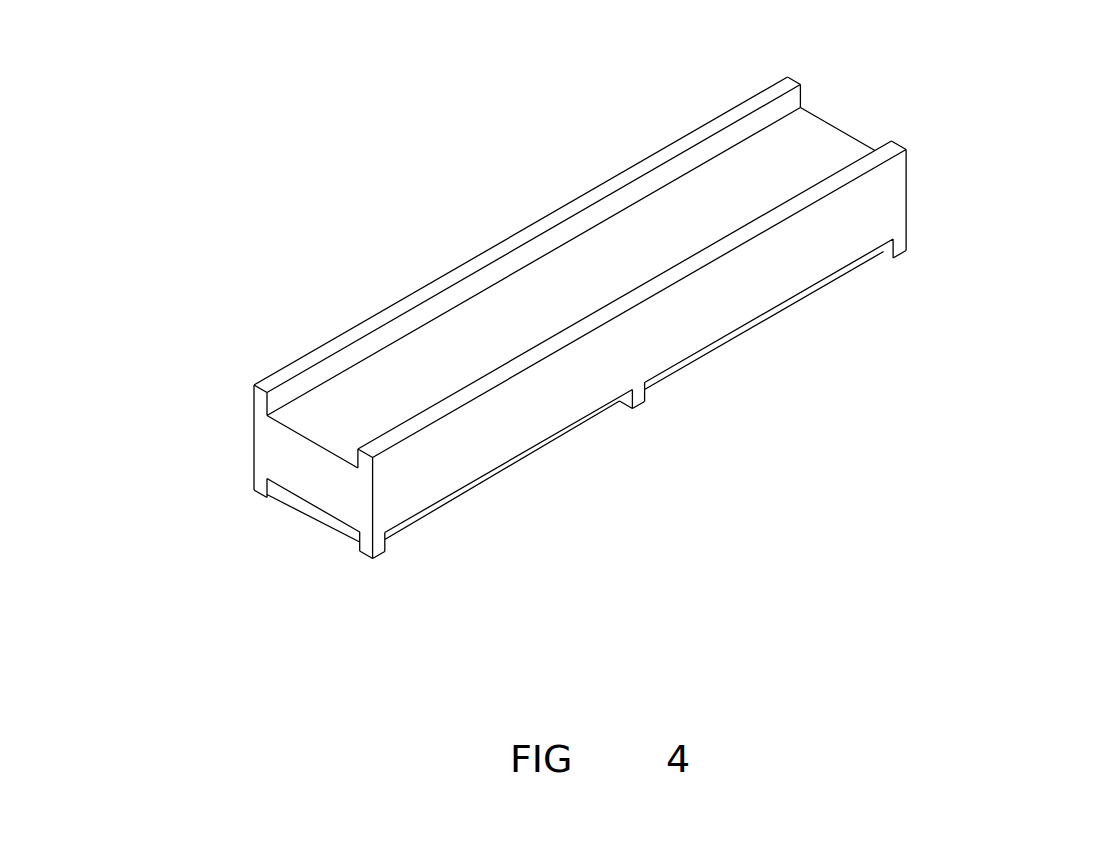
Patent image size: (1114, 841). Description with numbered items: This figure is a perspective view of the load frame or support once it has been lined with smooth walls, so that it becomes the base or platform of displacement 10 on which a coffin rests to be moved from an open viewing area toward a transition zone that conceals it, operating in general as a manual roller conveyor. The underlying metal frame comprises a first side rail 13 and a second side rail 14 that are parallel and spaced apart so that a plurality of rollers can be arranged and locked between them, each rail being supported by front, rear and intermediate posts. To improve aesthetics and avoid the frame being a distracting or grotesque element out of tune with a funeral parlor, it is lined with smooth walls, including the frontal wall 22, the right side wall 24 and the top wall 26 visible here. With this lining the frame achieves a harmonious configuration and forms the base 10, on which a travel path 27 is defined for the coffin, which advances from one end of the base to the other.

The base or platform of displacement 10 is at (591, 289).
The first side rail 13 is at (570, 211).
The second side rail 14 is at (748, 231).
The frontal wall 22 is at (317, 482).
The right side wall 24 is at (682, 334).
The top wall 26 is at (762, 163).
The travel path 27 is at (855, 123).